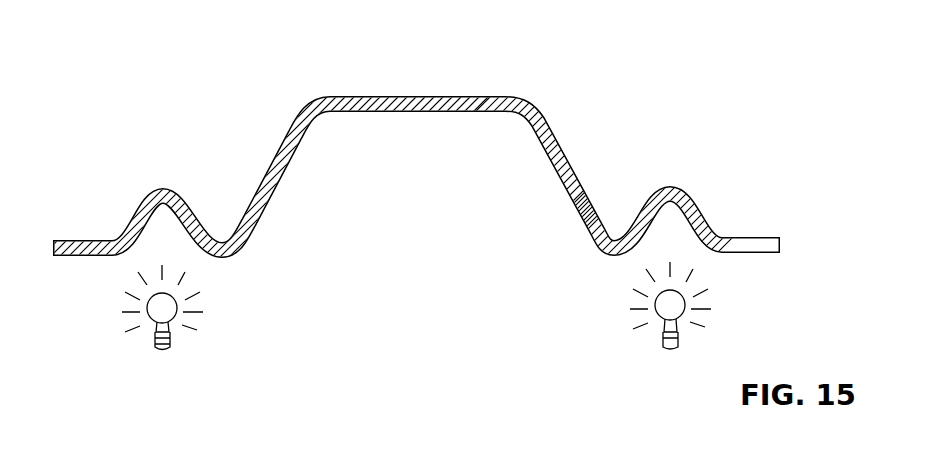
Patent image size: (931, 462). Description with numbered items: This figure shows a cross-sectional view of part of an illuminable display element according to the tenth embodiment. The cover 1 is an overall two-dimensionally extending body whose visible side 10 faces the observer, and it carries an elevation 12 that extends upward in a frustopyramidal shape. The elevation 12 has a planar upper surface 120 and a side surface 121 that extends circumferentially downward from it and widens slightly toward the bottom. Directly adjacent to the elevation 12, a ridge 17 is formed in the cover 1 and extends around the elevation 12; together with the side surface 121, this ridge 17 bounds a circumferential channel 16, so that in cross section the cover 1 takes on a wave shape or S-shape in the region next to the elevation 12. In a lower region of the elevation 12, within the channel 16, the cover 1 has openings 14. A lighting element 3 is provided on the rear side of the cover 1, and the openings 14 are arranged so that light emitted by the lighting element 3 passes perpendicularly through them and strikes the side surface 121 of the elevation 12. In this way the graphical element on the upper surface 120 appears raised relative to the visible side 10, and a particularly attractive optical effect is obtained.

The elevation 12 is at (444, 212).
The cover 1 is at (278, 153).
The visible side 10 is at (375, 95).
The upper surface 120 is at (460, 95).
The side surface 121 is at (573, 183).
The channel 16 is at (610, 213).
The ridge 17 is at (693, 200).
The openings 14 is at (608, 253).
The lighting element 3 is at (162, 318).